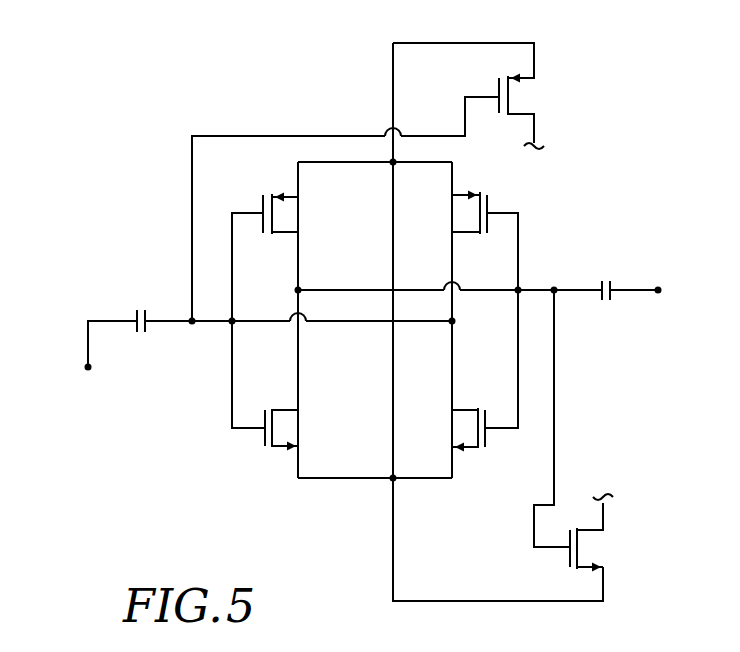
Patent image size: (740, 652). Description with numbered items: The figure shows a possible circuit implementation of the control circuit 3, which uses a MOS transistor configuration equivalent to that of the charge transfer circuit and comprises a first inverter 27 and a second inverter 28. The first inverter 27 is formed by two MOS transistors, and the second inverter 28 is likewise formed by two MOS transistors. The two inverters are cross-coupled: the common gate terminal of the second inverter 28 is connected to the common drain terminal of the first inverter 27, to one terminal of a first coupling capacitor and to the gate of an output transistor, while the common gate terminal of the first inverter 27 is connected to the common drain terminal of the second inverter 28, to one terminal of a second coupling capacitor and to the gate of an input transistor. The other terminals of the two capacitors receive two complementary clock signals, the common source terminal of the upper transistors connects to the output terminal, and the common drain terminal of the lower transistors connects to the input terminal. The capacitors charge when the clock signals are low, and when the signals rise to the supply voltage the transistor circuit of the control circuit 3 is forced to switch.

The control circuit 3 is at (86, 197).
The first inverter 27 is at (207, 379).
The second inverter 28 is at (557, 211).